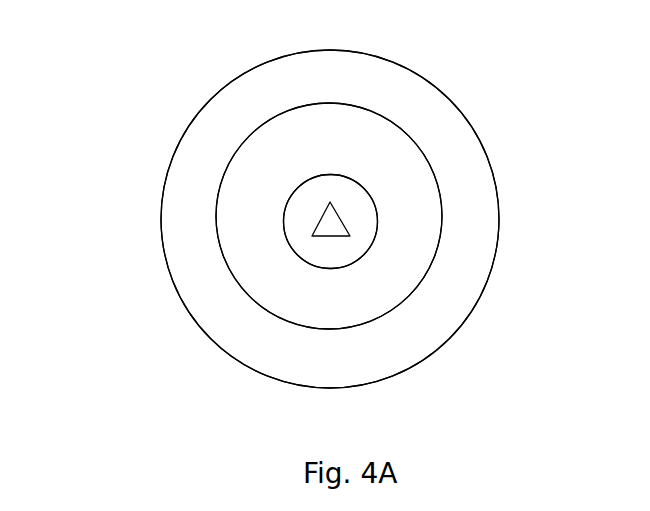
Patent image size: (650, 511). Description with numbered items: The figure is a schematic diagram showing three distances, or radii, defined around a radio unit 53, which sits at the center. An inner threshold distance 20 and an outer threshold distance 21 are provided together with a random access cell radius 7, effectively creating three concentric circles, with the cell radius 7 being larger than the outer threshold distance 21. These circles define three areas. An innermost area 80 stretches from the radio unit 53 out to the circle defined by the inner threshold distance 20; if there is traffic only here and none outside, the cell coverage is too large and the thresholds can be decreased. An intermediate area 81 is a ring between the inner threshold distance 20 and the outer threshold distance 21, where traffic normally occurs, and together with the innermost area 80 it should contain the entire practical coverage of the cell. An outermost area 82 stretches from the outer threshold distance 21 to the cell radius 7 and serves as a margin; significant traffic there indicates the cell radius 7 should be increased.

The outermost area 82 is at (228, 100).
The intermediate area 81 is at (252, 182).
The innermost area 80 is at (297, 233).
The radio unit 53 is at (339, 219).
The inner threshold distance 20 is at (348, 177).
The random access cell radius 7 is at (499, 221).
The outer threshold distance 21 is at (433, 263).